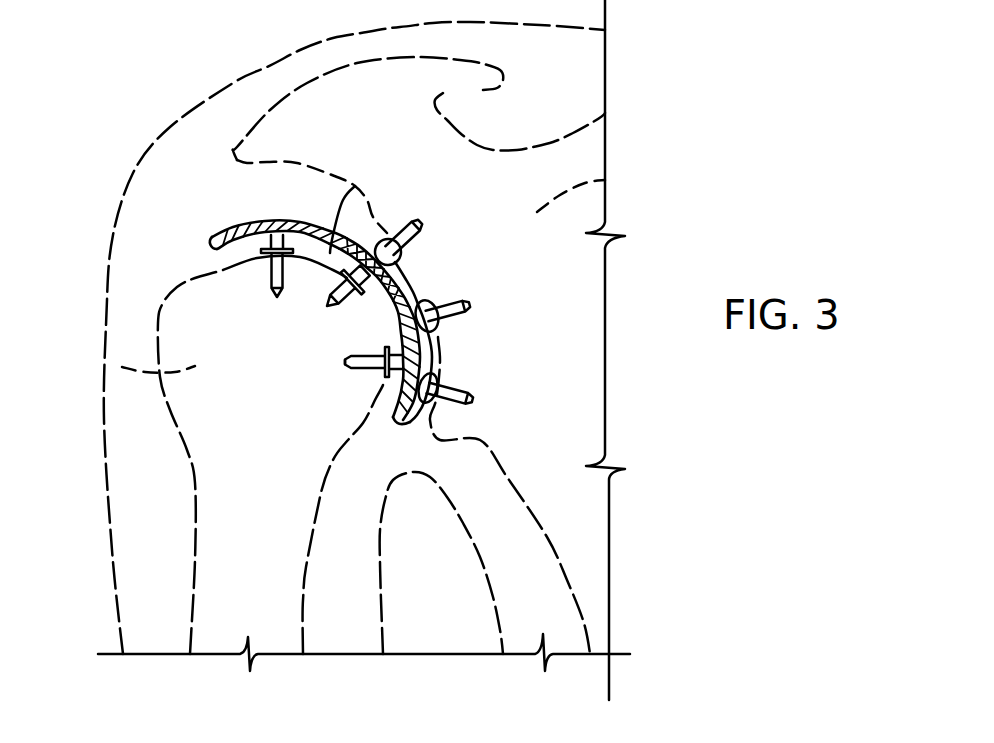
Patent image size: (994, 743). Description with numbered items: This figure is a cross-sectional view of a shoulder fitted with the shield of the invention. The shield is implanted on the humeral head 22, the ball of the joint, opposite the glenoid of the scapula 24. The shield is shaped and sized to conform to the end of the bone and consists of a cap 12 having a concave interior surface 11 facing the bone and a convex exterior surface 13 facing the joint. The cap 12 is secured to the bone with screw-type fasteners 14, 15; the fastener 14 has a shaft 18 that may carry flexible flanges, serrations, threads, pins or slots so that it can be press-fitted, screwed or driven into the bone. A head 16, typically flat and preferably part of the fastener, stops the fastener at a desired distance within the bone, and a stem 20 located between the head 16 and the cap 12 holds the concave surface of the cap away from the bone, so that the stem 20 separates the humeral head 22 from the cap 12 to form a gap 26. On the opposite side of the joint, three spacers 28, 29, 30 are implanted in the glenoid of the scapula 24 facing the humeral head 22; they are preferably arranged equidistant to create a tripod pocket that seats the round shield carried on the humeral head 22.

The concave interior surface 11 is at (400, 297).
The cap 12 is at (271, 263).
The convex exterior surface 13 is at (313, 221).
The fastener 14 is at (335, 305).
The fastener 15 is at (350, 367).
The head 16 is at (367, 370).
The shaft 18 is at (327, 298).
The stem 20 is at (367, 372).
The humeral head 22 is at (122, 367).
The scapula 24 is at (590, 180).
The gap 26 is at (355, 186).
The spacer 28 is at (438, 328).
The spacer 29 is at (450, 392).
The spacer 30 is at (403, 240).